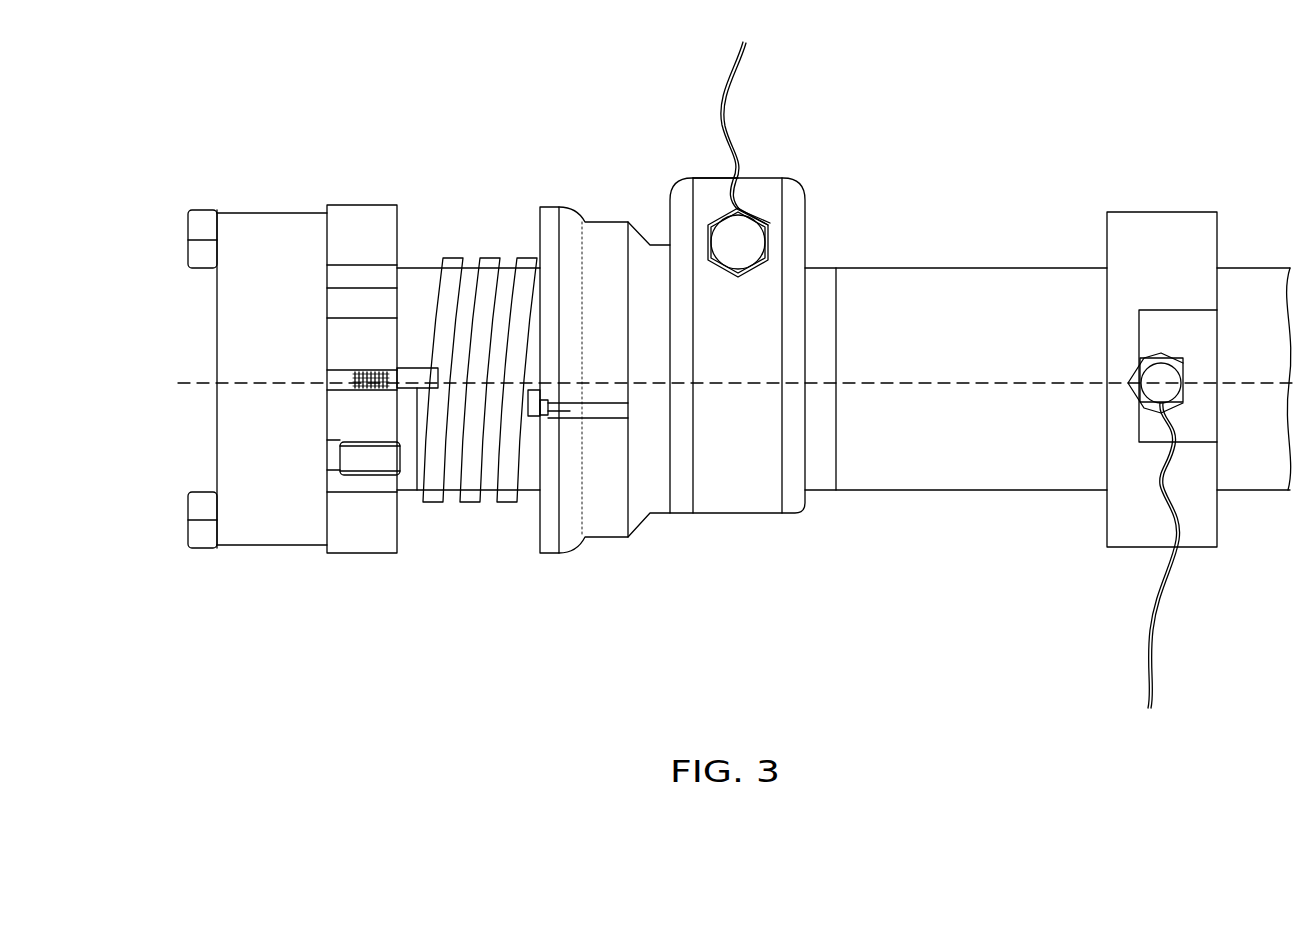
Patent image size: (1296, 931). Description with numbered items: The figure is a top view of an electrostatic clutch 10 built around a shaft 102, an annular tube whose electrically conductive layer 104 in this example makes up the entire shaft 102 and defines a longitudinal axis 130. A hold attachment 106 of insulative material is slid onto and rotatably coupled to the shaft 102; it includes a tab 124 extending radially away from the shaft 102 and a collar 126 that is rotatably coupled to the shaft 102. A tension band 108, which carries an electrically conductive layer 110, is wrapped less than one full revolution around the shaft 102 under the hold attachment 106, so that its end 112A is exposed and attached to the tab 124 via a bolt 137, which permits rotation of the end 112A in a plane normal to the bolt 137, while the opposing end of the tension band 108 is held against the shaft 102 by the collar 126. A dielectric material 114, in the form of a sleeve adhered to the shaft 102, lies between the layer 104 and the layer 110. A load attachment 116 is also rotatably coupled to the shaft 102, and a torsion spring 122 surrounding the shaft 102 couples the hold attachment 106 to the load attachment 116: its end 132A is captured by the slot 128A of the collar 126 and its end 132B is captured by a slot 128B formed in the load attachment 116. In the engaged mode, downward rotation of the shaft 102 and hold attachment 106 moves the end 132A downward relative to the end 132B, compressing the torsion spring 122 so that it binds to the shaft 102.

The electrostatic clutch 10 is at (282, 619).
The shaft 102 is at (1006, 503).
The layer 104 is at (973, 292).
The hold attachment 106 is at (754, 353).
The tension band 108 is at (767, 158).
The layer 110 is at (710, 193).
The end 112A is at (765, 200).
The dielectric material 114 is at (818, 473).
The load attachment 116 is at (271, 235).
The torsion spring 122 is at (434, 492).
The tab 124 is at (673, 212).
The collar 126 is at (602, 230).
The slot 128A is at (642, 410).
The slot 128B is at (316, 375).
The longitudinal axis 130 is at (1058, 380).
The end 132A is at (535, 404).
The end 132B is at (412, 377).
The bolt 137 is at (745, 247).